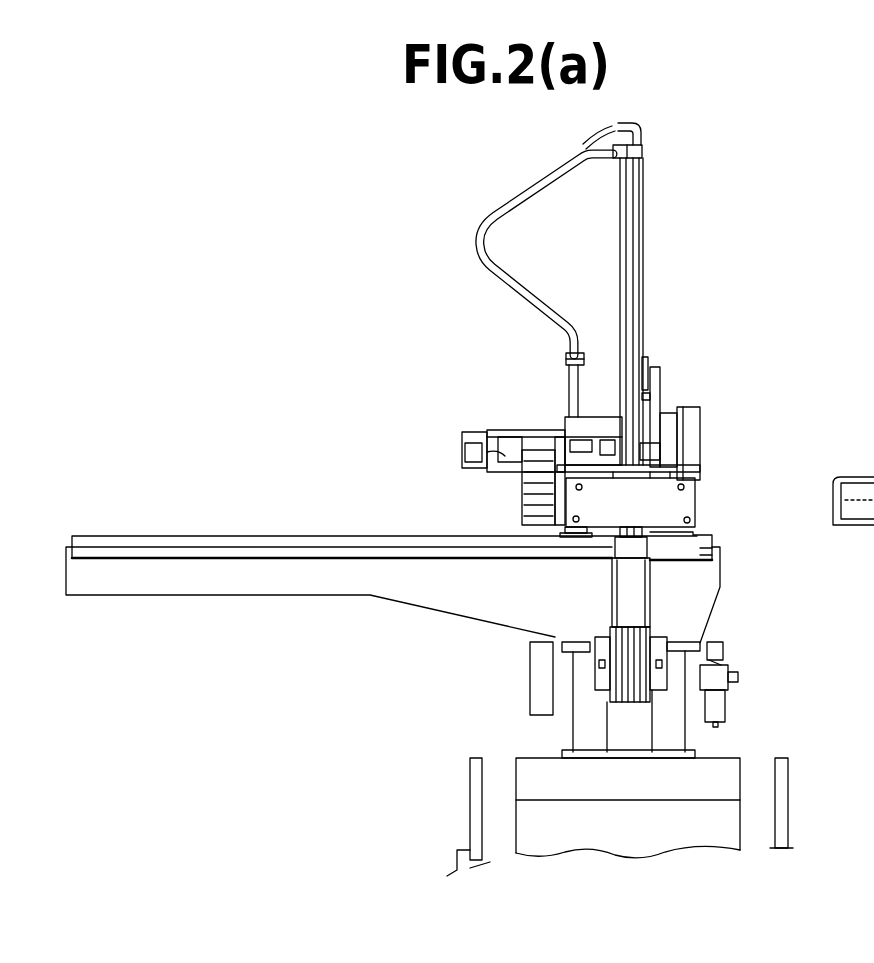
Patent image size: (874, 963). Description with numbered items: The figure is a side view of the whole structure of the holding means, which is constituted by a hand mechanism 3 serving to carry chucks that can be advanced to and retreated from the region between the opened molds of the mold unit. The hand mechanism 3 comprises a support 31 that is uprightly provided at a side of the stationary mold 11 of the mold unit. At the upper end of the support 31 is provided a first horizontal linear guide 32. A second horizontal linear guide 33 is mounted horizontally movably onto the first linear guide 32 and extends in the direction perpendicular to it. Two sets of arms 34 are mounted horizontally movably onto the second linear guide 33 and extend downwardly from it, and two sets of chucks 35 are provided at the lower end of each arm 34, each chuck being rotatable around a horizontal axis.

The hand mechanism 3 is at (338, 318).
The stationary mold 11 is at (705, 822).
The support 31 is at (585, 728).
The first horizontal linear guide 32 is at (246, 582).
The second horizontal linear guide 33 is at (685, 505).
The arms 34 is at (633, 586).
The chucks 35 is at (655, 640).